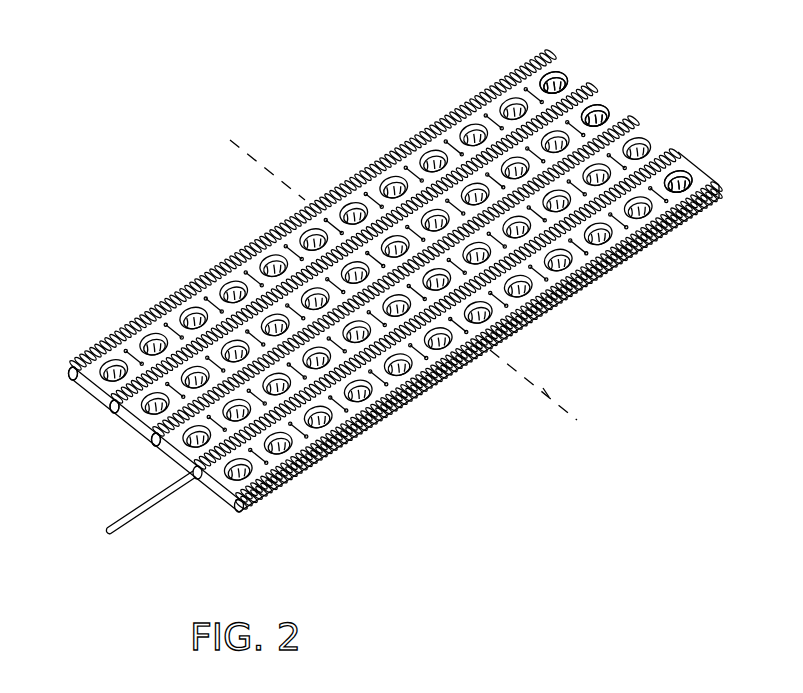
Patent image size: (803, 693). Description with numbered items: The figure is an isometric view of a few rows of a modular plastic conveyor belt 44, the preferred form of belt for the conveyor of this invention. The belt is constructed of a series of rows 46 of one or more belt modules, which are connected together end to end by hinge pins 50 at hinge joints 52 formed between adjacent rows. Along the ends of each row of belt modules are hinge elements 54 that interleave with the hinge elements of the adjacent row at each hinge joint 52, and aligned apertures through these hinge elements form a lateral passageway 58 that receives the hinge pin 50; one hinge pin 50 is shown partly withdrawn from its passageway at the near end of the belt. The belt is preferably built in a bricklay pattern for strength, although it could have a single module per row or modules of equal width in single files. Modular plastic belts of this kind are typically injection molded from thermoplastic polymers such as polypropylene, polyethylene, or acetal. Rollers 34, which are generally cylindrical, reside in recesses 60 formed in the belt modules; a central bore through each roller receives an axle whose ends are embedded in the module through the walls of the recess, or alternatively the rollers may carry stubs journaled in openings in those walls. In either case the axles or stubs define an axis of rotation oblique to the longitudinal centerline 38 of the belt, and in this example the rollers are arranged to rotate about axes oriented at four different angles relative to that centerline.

The modular plastic conveyor belt 44 is at (371, 100).
The recess 60 is at (557, 72).
The roller 34 is at (600, 110).
The row 46 is at (684, 145).
The longitudinal centerline 38 is at (562, 379).
The hinge element 54 is at (70, 372).
The lateral passageway 58 is at (120, 410).
The hinge joint 52 is at (158, 428).
The hinge pin 50 is at (160, 497).